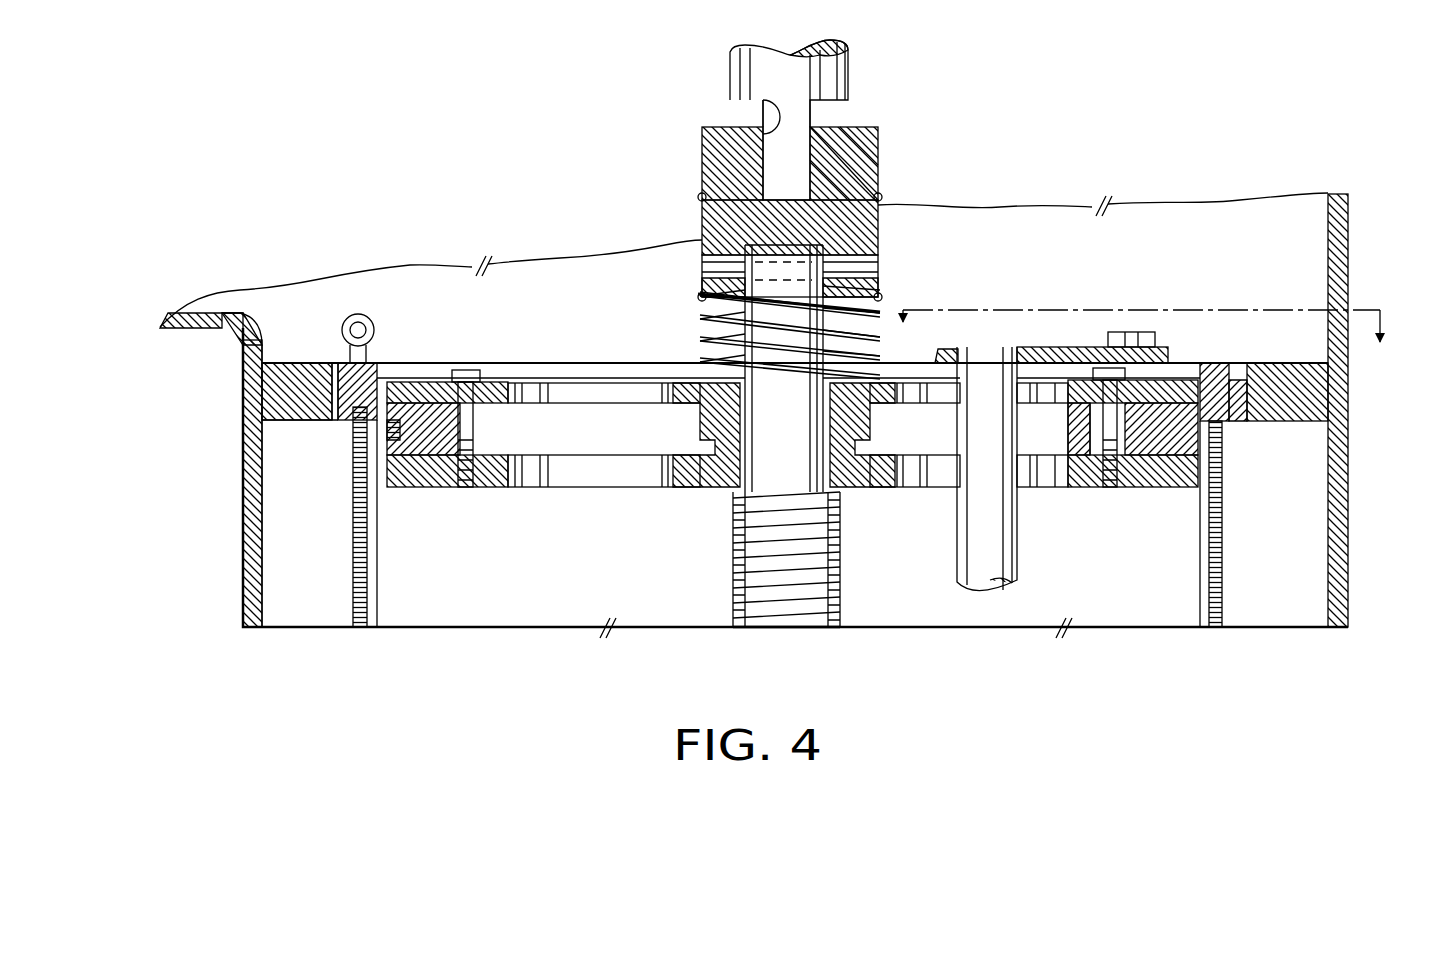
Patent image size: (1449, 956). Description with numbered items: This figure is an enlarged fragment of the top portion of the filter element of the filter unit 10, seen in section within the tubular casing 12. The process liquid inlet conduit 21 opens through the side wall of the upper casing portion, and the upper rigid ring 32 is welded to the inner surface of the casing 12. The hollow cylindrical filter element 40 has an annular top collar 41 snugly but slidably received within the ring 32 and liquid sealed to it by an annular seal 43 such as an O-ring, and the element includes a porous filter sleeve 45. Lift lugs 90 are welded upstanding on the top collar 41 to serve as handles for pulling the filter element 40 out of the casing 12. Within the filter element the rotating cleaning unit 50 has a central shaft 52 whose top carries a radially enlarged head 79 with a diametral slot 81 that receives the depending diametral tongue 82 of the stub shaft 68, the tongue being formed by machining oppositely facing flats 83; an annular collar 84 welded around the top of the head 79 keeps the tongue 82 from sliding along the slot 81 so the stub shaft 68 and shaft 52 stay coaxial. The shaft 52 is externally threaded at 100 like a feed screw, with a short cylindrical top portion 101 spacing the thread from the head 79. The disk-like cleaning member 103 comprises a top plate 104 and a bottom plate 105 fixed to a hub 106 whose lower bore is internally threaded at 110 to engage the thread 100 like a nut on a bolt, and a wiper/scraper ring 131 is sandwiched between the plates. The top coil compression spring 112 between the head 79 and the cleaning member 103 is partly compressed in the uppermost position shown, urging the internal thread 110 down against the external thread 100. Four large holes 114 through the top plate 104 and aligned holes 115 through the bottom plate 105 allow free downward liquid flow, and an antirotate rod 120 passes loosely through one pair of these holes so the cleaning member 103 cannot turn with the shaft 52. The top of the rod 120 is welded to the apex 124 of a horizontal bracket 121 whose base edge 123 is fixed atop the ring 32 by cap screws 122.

The filter unit 10 is at (1142, 351).
The tubular casing 12 is at (1340, 217).
The process liquid inlet conduit 21 is at (185, 330).
The upper rigid ring 32 is at (298, 378).
The filter element 40 is at (241, 554).
The top collar 41 is at (377, 380).
The annular seal 43 is at (330, 395).
The porous filter sleeve 45 is at (350, 567).
The cleaning unit 50 is at (952, 634).
The central shaft 52 is at (787, 630).
The stub shaft 68 is at (840, 75).
The head 79 is at (715, 222).
The diametral slot 81 is at (760, 118).
The diametral tongue 82 is at (795, 155).
The flats 83 is at (865, 142).
The annular collar 84 is at (712, 165).
The lift lugs 90 is at (355, 318).
The external thread 100 is at (740, 595).
The cylindrical top portion 101 is at (773, 337).
The cleaning member 103 is at (478, 499).
The top plate 104 is at (438, 390).
The bottom plate 105 is at (422, 488).
The hub 106 is at (698, 432).
The internal thread 110 is at (757, 468).
The top coil compression spring 112 is at (884, 292).
The holes 114 is at (525, 380).
The holes 115 is at (1050, 490).
The antirotate rod 120 is at (1003, 540).
The bracket 121 is at (1082, 352).
The cap screws 122 is at (1122, 340).
The base edge 123 is at (1165, 358).
The apex 124 is at (945, 350).
The wiper/scraper ring 131 is at (457, 385).